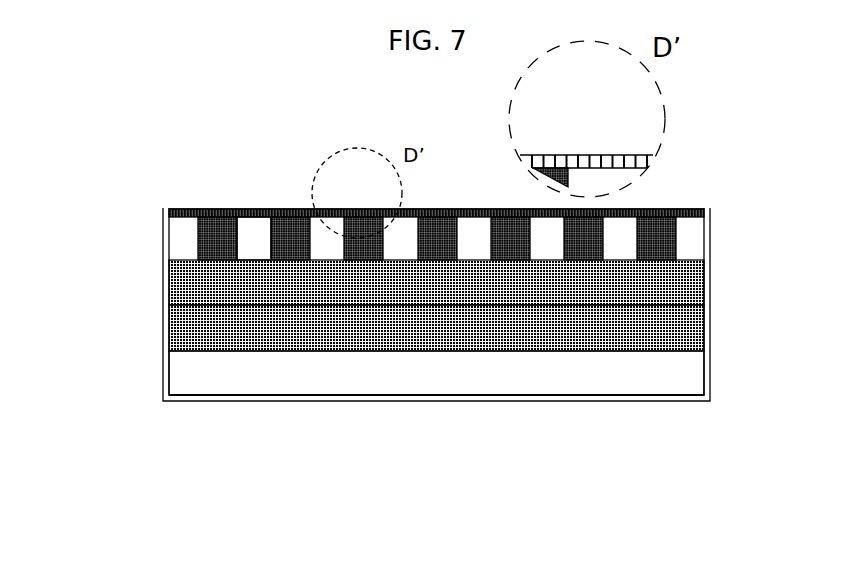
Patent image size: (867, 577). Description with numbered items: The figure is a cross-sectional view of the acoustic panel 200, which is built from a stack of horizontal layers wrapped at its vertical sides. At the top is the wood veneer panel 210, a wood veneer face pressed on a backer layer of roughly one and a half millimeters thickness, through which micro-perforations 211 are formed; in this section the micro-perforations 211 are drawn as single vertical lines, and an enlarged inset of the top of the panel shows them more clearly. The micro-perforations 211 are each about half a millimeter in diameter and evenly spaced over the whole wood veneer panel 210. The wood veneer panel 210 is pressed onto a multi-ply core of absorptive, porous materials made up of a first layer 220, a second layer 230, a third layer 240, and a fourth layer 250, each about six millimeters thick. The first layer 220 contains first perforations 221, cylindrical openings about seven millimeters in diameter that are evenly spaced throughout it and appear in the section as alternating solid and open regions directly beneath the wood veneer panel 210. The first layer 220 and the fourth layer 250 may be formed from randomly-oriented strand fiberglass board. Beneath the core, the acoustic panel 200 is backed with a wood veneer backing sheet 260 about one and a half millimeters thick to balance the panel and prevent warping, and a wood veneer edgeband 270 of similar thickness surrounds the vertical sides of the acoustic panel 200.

The acoustic panel 200 is at (203, 57).
The wood veneer panel 210 is at (387, 207).
The micro-perforations 211 is at (328, 207).
The first layer 220 is at (213, 243).
The first perforations 221 is at (255, 243).
The second layer 230 is at (215, 281).
The third layer 240 is at (215, 326).
The fourth layer 250 is at (215, 371).
The wood veneer backing sheet 260 is at (247, 403).
The wood veneer edgeband 270 is at (158, 398).